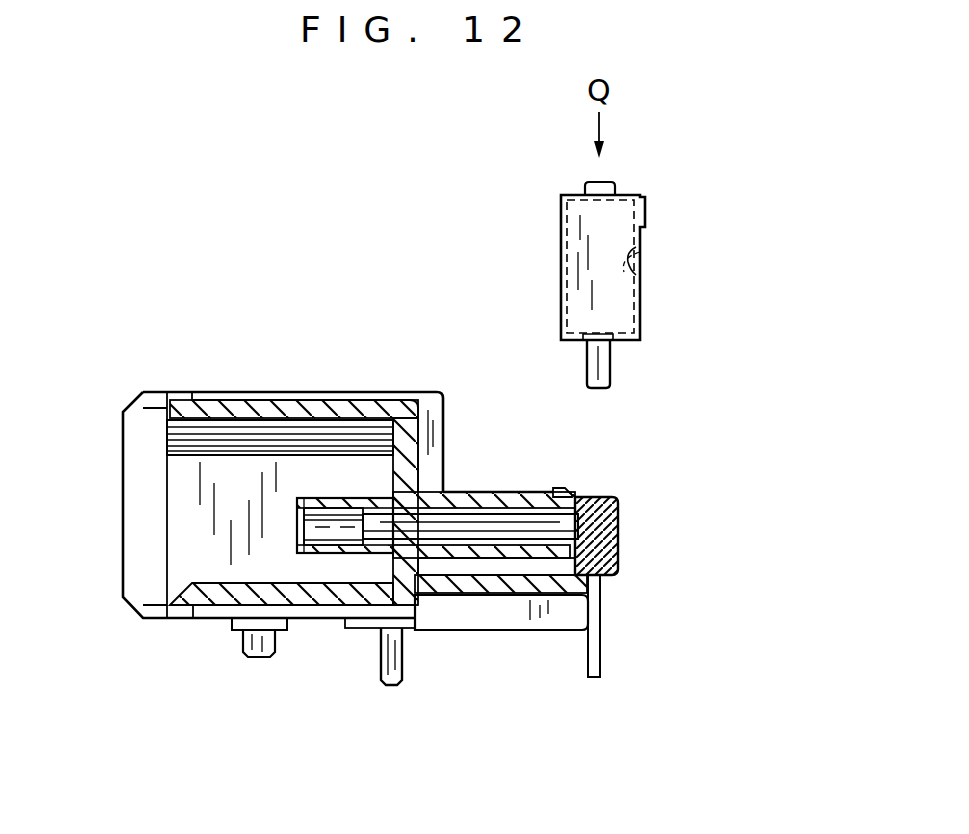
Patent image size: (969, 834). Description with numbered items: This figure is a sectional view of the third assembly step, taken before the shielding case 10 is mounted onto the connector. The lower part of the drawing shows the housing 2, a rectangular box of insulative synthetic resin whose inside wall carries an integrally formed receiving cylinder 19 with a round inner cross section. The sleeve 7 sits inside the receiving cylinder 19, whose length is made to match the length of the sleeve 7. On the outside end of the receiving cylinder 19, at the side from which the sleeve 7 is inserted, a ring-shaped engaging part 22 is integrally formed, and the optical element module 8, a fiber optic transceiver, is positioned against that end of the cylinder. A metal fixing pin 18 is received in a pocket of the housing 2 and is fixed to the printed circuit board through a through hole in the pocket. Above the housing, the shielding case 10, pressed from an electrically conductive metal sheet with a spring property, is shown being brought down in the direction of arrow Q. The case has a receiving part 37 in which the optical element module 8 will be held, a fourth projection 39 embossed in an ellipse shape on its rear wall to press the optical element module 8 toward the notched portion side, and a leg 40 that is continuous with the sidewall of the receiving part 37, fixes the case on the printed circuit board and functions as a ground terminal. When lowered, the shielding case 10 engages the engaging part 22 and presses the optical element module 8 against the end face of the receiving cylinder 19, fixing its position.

The housing 2 is at (122, 552).
The sleeve 7 is at (498, 530).
The optical element module 8 is at (597, 498).
The shielding case 10 is at (562, 243).
The fixing pin 18 is at (383, 658).
The receiving cylinder 19 is at (468, 492).
The engaging part 22 is at (560, 496).
The receiving part 37 is at (573, 293).
The fourth projection 39 is at (640, 277).
The leg 40 is at (610, 362).